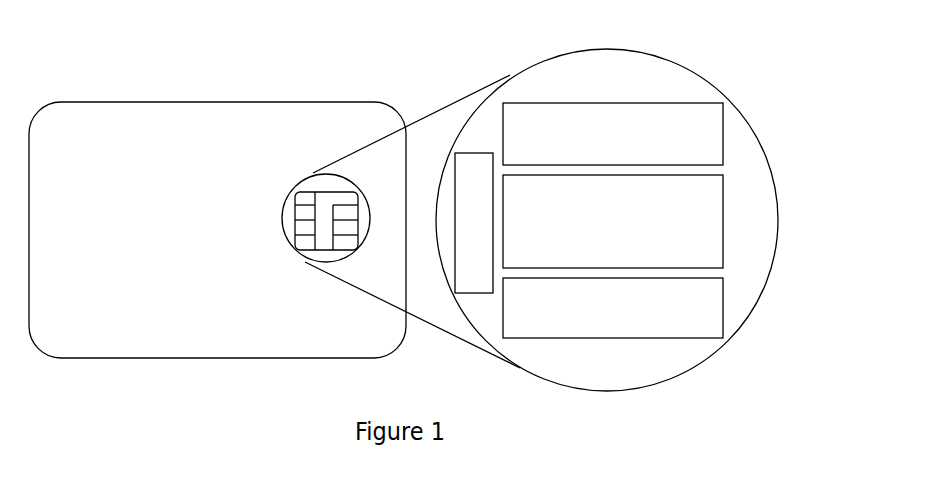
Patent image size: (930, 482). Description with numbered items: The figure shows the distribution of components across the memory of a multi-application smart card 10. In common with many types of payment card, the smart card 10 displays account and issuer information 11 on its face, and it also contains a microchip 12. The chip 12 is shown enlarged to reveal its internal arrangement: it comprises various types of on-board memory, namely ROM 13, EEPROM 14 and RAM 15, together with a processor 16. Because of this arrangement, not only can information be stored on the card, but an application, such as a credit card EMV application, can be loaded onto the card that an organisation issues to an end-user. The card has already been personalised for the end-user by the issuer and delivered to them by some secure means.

The smart card 10 is at (218, 41).
The account and issuer information 11 is at (240, 283).
The microchip 12 is at (333, 164).
The ROM 13 is at (666, 317).
The EEPROM 14 is at (671, 208).
The RAM 15 is at (647, 97).
The processor 16 is at (459, 167).